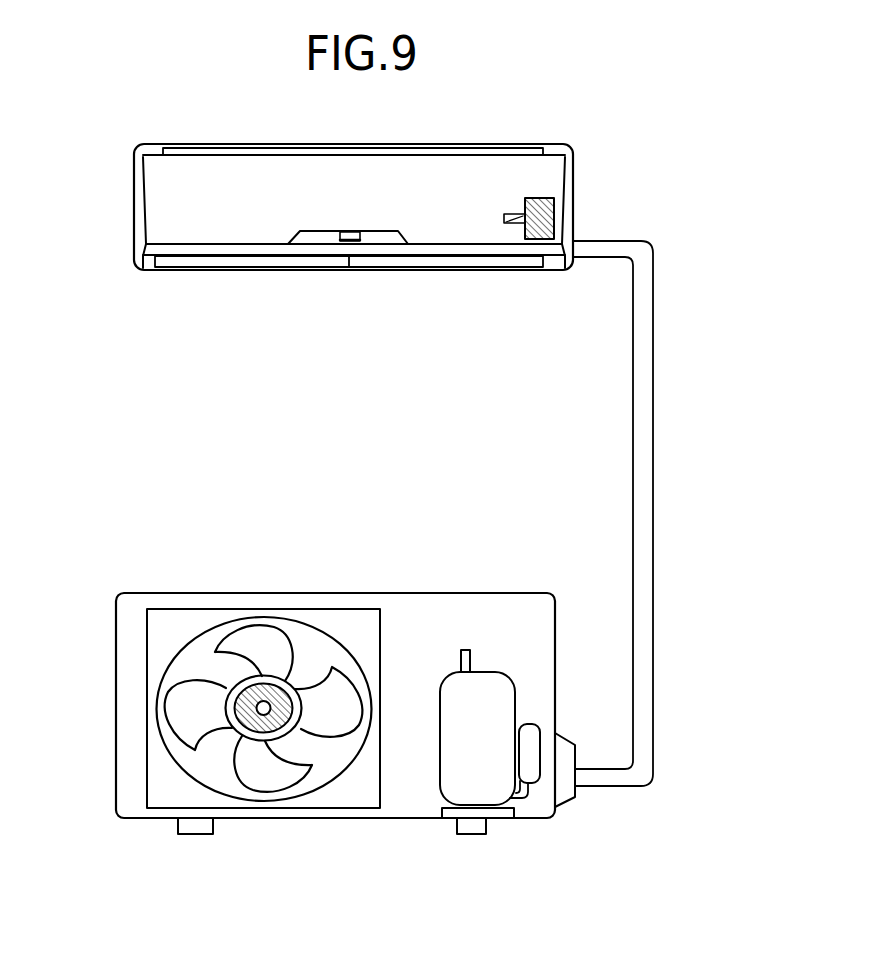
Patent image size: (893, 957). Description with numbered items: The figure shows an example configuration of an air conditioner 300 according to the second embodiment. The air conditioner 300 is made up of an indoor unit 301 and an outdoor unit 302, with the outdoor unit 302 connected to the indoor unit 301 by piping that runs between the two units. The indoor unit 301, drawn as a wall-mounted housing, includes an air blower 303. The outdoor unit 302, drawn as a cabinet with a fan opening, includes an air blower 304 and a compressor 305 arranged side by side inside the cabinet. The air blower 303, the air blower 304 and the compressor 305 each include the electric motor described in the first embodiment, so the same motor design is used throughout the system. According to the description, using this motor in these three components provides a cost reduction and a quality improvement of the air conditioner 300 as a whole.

The air conditioner 300 is at (683, 334).
The indoor unit 301 is at (195, 270).
The outdoor unit 302 is at (207, 593).
The air blower 303 is at (555, 218).
The air blower 304 is at (240, 709).
The compressor 305 is at (449, 772).